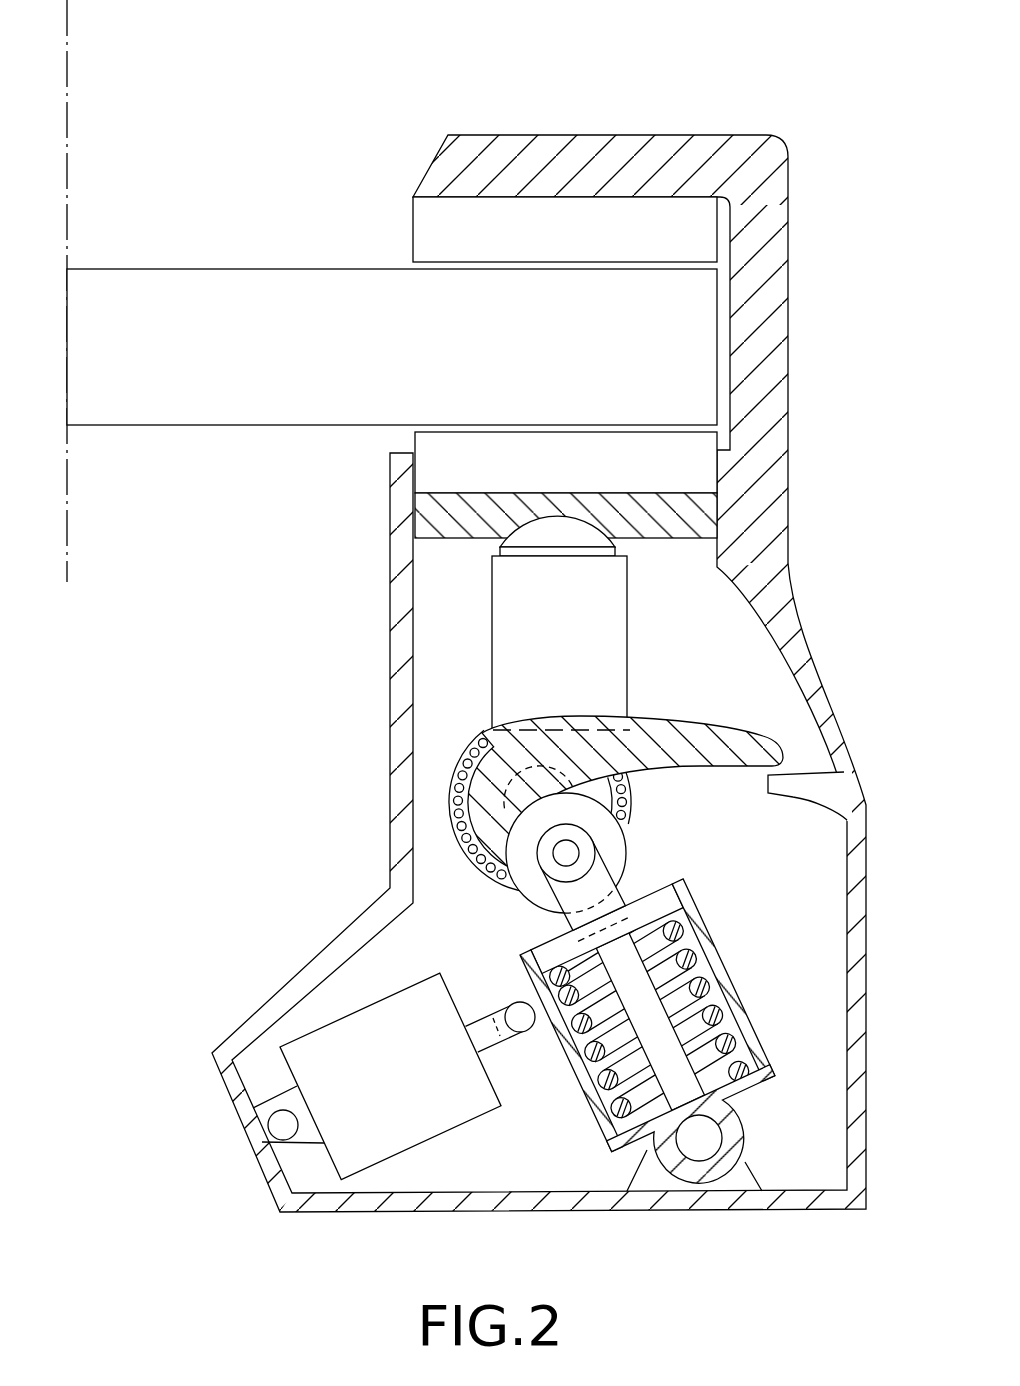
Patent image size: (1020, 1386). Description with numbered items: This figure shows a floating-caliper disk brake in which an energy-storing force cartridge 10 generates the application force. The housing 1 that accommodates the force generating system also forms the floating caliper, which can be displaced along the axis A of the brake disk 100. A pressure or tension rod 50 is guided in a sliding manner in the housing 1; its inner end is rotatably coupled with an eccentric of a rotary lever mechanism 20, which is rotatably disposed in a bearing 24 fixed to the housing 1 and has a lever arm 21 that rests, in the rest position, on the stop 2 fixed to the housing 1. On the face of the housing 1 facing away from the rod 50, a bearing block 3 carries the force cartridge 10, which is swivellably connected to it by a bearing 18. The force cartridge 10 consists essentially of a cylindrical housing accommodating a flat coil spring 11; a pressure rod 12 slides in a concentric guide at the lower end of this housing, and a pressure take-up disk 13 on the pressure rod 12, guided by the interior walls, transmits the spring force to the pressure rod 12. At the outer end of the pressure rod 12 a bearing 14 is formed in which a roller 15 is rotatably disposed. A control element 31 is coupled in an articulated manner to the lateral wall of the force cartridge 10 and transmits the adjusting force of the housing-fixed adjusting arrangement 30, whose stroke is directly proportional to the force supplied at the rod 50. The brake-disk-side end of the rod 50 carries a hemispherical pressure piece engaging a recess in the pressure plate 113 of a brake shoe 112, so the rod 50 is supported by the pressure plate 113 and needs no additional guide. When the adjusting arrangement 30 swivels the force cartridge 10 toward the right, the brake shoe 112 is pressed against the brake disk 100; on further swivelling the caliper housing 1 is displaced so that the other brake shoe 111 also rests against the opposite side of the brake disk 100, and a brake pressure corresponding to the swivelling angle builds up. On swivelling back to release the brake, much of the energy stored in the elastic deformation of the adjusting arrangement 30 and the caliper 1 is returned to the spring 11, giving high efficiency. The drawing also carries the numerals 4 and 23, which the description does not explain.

The housing 1 is at (868, 977).
The stop 2 is at (830, 790).
The bearing block 3 is at (742, 1186).
The mounting pin 4 is at (272, 1143).
The force generating device 10 is at (664, 1068).
The flat coil spring 11 is at (663, 1080).
The pressure rod 12 is at (635, 1118).
The pressure take-up disk 13 is at (680, 907).
The bearing 14 is at (578, 876).
The roller 15 is at (533, 907).
The bearing 18 is at (713, 1140).
The rotary lever mechanism 20 is at (492, 813).
The lever arm 21 is at (712, 726).
The lever end 23 is at (740, 768).
The bearing 24 is at (456, 750).
The adjusting arrangement 30 is at (418, 1147).
The control element 31 is at (503, 1040).
The pressure or tension rod 50 is at (627, 640).
The brake disk 100 is at (298, 269).
The brake shoe 111 is at (553, 215).
The brake shoe 112 is at (695, 470).
The pressure plate 113 is at (695, 526).
The axis A is at (67, 556).